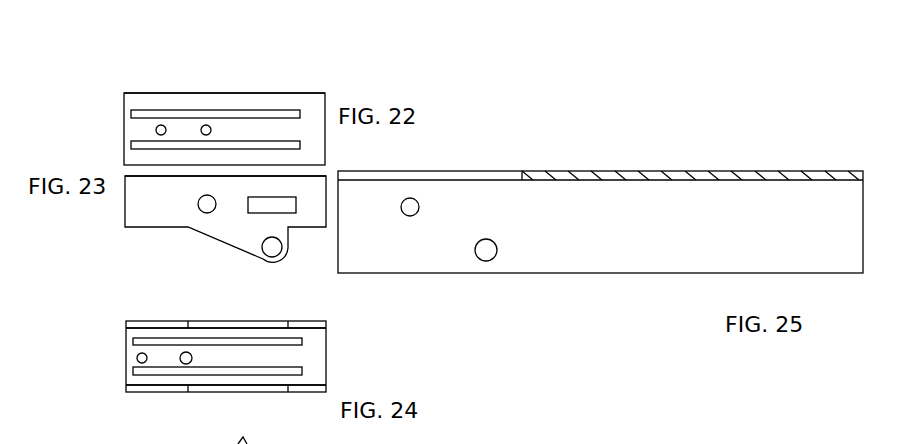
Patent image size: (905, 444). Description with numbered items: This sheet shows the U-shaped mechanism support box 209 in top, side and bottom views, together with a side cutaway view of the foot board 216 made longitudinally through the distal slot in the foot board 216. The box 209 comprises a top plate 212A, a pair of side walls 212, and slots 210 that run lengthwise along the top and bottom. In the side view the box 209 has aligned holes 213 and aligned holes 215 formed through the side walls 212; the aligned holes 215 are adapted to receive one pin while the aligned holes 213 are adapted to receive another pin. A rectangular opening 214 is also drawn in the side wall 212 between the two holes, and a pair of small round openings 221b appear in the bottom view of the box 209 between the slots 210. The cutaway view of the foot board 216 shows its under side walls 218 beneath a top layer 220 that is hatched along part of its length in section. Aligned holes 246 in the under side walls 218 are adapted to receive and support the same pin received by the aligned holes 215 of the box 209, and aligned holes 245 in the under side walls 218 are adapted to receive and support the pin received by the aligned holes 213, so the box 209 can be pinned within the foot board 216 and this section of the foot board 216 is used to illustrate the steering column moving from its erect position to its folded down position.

In FIG. 22, the box 209 is at (256, 88).
In FIG. 23, the box 209 is at (118, 211).
In FIG. 24, the box 209 is at (218, 397).
In FIG. 22, the slots 210 is at (176, 143).
In FIG. 24, the slots 210 is at (161, 347).
In FIG. 23, the side walls 212 is at (147, 196).
In FIG. 24, the side walls 212 is at (307, 331).
In FIG. 22, the top plate 212A is at (203, 96).
In FIG. 23, the aligned holes 213 is at (201, 212).
In FIG. 23, the rectangular opening 214 is at (258, 209).
In FIG. 23, the aligned holes 215 is at (281, 253).
In FIG. 25, the foot board 216 is at (668, 170).
In FIG. 25, the under side walls 218 is at (568, 240).
In FIG. 25, the top layer 220 is at (473, 175).
In FIG. 24, the holes 221b is at (130, 344).
In FIG. 25, the aligned holes 245 is at (411, 212).
In FIG. 25, the aligned holes 246 is at (489, 258).